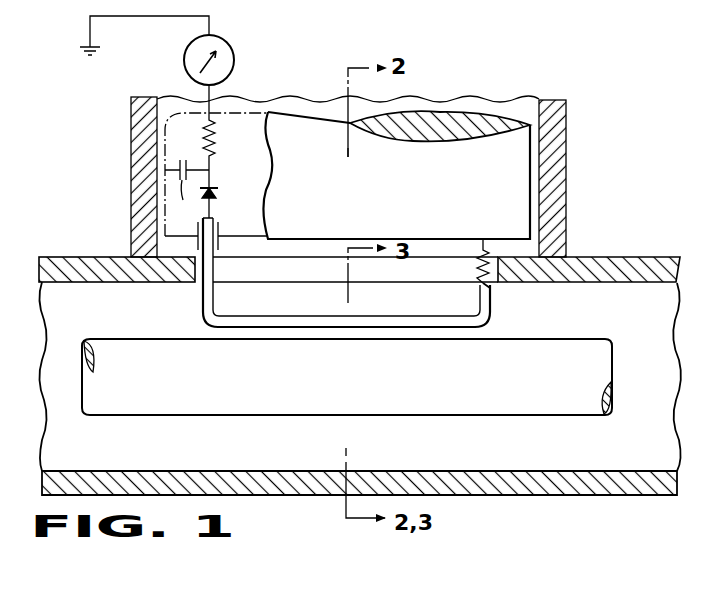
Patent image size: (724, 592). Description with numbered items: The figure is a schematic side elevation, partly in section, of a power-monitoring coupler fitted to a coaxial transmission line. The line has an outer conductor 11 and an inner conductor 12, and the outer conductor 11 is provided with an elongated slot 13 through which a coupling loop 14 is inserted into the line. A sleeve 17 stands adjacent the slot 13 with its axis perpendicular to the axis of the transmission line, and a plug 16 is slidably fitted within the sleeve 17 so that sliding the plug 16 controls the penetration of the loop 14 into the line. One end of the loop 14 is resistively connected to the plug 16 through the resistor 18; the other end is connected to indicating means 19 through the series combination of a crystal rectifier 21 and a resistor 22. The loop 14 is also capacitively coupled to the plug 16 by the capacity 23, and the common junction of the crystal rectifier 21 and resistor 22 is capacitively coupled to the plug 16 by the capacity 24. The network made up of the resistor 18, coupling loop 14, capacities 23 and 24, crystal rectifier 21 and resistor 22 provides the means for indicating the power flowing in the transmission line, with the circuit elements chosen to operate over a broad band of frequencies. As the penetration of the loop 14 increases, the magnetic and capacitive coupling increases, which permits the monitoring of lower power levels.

The outer conductor 11 is at (73, 264).
The inner conductor 12 is at (276, 405).
The elongated slot 13 is at (270, 270).
The coupling loop 14 is at (490, 308).
The plug 16 is at (472, 183).
The sleeve 17 is at (556, 181).
The resistor 18 is at (488, 252).
The indicating means 19 is at (233, 64).
The crystal rectifier 21 is at (217, 190).
The resistor 22 is at (215, 146).
The capacitive coupling 23 is at (219, 228).
The capacitive coupling 24 is at (187, 192).